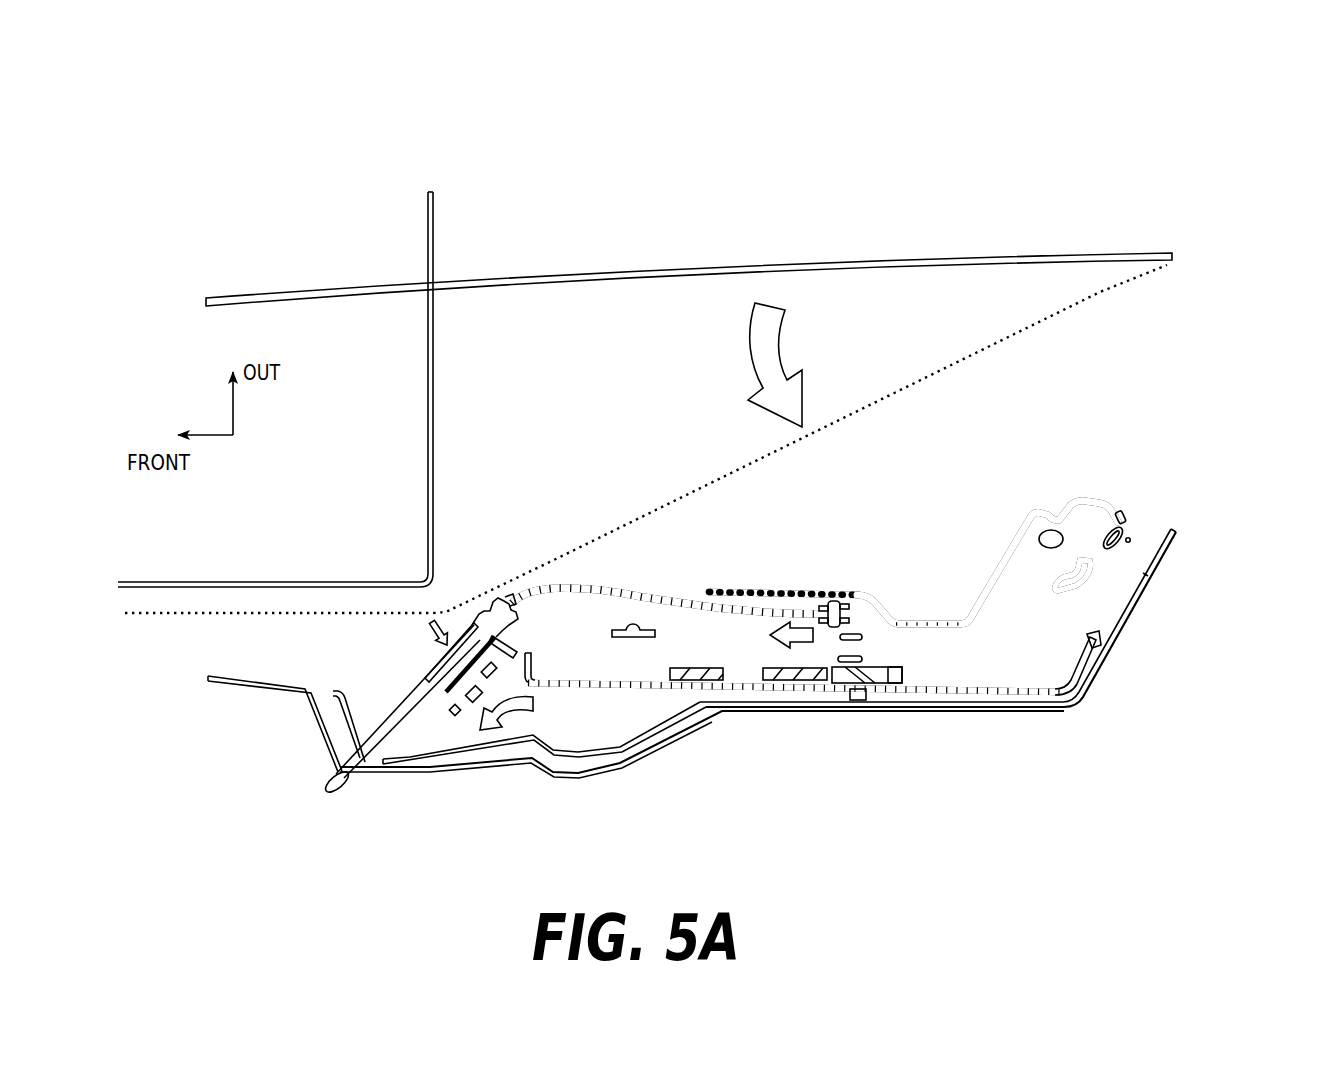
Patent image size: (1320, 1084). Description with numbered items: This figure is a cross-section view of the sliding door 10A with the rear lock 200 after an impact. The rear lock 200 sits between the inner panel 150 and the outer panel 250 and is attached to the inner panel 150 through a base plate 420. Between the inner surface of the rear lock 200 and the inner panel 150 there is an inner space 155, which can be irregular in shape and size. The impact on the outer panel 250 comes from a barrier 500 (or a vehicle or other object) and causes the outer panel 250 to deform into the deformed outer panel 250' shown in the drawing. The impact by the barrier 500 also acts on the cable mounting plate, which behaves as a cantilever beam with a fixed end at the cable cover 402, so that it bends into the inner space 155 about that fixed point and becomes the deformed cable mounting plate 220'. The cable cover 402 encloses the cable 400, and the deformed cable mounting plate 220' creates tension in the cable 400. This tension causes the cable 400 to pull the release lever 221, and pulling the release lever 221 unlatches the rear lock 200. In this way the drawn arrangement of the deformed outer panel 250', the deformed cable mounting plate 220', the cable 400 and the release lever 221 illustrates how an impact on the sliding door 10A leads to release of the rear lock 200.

The sliding door 10A is at (1203, 116).
The inner panel 150 is at (294, 713).
The inner space 155 is at (429, 734).
The rear lock 200 is at (953, 578).
The deformed cable mounting plate 220' is at (426, 699).
The release lever 221 is at (857, 592).
The outer panel 250 is at (689, 256).
The deformed outer panel 250' is at (646, 439).
The cable 400 is at (688, 594).
The cable cover 402 is at (493, 600).
The base plate 420 is at (983, 696).
The barrier 500 is at (421, 250).